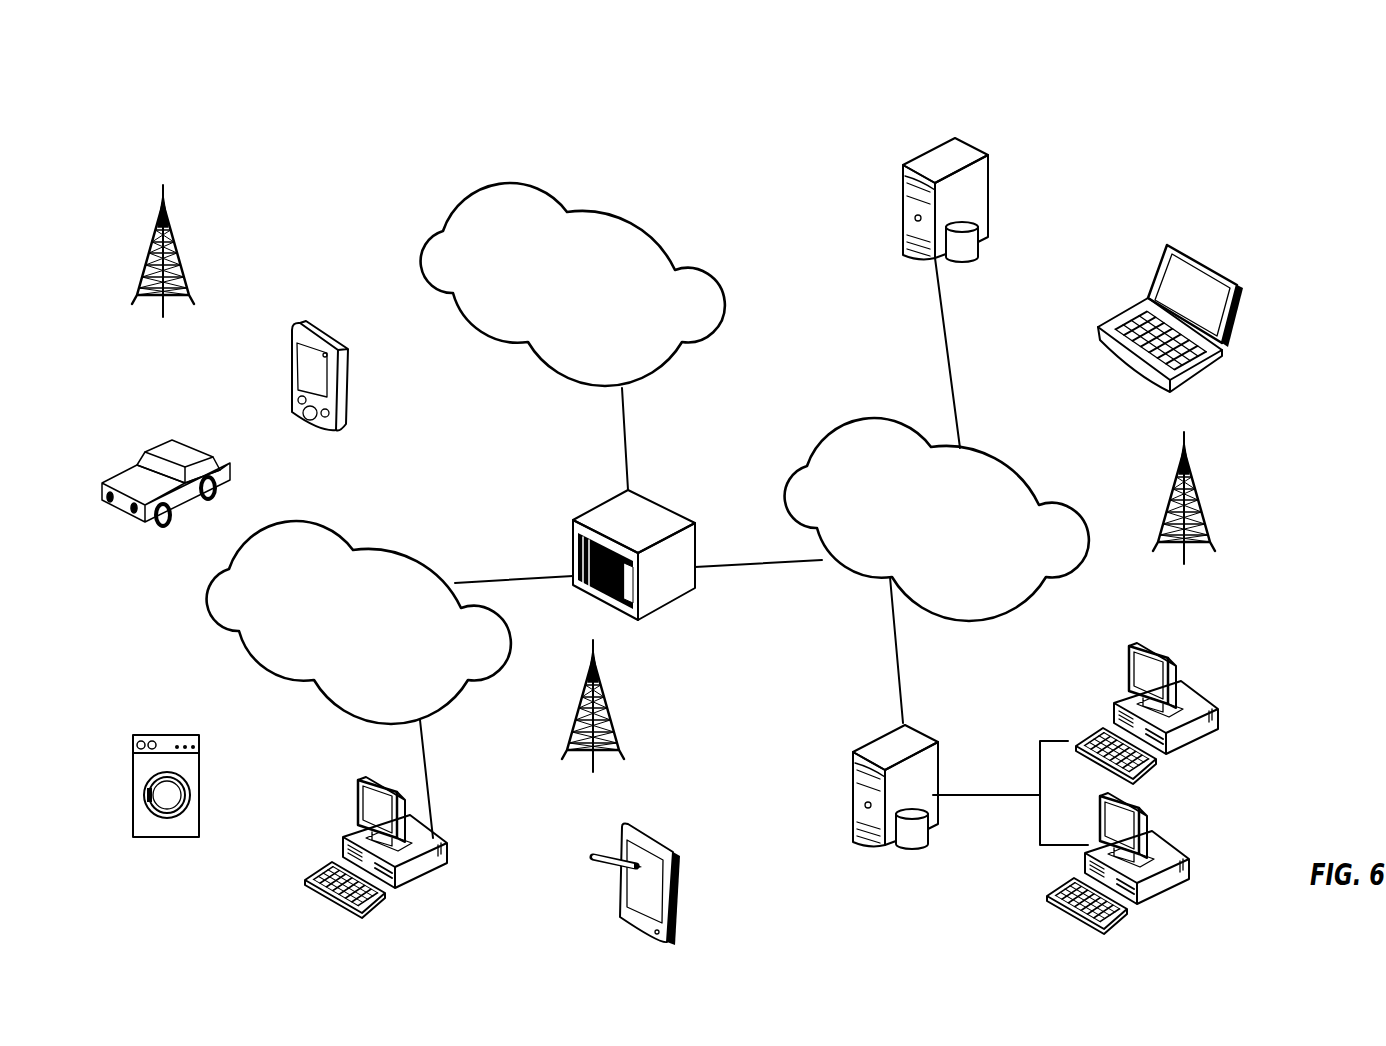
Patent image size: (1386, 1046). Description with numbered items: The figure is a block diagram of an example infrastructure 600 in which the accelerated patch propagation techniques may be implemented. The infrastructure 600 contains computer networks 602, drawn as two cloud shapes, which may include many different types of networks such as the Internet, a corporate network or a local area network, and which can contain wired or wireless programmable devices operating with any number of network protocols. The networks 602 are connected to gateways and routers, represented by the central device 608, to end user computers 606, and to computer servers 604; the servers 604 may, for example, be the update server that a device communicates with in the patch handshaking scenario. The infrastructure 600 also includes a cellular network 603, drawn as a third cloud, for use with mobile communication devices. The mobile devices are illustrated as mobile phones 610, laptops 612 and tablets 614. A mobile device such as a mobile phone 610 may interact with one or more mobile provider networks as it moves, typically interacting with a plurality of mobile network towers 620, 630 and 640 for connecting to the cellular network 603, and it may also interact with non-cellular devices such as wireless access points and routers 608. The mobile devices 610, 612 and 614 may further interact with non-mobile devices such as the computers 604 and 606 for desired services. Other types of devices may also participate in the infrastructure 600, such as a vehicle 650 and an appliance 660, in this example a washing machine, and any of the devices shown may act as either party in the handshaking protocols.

The infrastructure 600 is at (1077, 237).
The computer networks 602 is at (1028, 482).
The cellular network 603 is at (618, 217).
The computer servers 604 is at (905, 193).
The end user computers 606 is at (447, 840).
The gateways and routers 608 is at (655, 503).
The mobile phones 610 is at (327, 333).
The laptops 612 is at (1213, 270).
The tablets 614 is at (662, 838).
The mobile network tower 620 is at (593, 721).
The mobile network tower 630 is at (1184, 513).
The mobile network tower 640 is at (163, 266).
The vehicle 650 is at (172, 440).
The appliance 660 is at (199, 787).